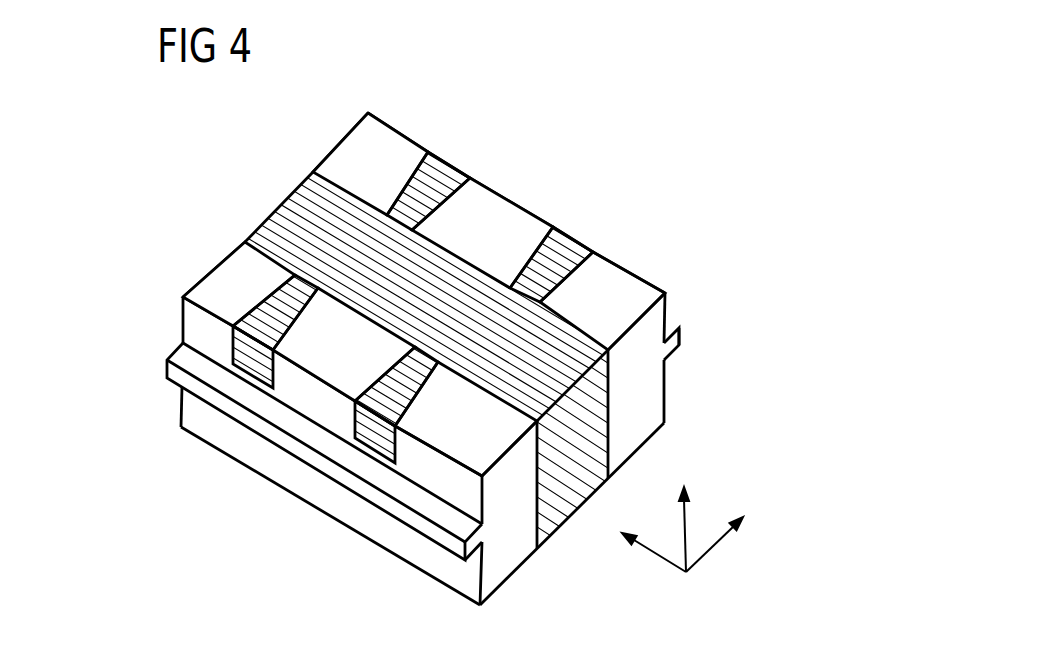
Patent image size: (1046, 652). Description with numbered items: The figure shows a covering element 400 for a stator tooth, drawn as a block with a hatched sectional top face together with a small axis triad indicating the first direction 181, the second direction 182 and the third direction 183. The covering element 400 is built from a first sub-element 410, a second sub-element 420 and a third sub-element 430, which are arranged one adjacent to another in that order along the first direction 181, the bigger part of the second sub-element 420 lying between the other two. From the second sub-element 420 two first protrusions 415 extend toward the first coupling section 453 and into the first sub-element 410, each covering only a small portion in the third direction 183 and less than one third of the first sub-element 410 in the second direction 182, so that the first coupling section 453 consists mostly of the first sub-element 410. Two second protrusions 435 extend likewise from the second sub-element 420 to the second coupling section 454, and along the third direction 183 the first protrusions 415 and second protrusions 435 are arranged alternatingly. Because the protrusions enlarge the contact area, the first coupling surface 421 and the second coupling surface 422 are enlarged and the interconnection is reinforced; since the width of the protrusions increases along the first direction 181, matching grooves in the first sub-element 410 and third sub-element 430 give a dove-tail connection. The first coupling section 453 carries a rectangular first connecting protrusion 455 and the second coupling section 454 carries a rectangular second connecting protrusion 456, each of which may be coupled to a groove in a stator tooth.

The covering element 400 is at (645, 133).
The first sub-element 410 is at (236, 262).
The first protrusions 415 is at (254, 306).
The second sub-element 420 is at (288, 208).
The first coupling surface 421 is at (302, 320).
The second coupling surface 422 is at (465, 258).
The third sub-element 430 is at (383, 142).
The second protrusions 435 is at (440, 172).
The first coupling section 453 is at (427, 558).
The second coupling section 454 is at (680, 315).
The first connecting protrusion 455 is at (367, 493).
The second connecting protrusion 456 is at (682, 348).
The first direction 181 is at (712, 553).
The second direction 182 is at (688, 522).
The third direction 183 is at (662, 562).